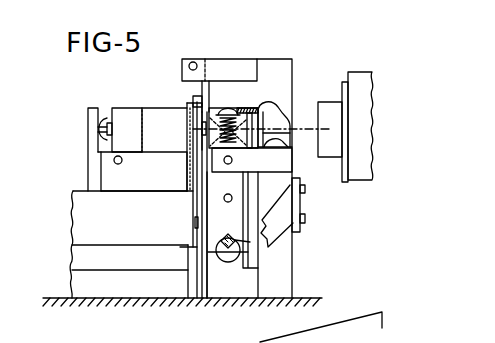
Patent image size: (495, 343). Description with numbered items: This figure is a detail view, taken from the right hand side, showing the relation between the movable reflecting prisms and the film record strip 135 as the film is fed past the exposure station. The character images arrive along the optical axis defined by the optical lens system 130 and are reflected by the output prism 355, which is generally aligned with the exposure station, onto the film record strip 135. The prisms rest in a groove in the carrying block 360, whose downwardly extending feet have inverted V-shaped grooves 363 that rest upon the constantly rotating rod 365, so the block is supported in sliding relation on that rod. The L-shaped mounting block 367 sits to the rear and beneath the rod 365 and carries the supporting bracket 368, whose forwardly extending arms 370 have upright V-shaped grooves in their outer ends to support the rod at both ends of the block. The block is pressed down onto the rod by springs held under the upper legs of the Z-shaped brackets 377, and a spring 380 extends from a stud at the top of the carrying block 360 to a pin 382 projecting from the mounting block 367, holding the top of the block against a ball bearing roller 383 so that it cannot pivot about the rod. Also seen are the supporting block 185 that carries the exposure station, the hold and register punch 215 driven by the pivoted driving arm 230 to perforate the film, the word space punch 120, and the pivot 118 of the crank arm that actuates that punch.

The pivot 118 is at (195, 63).
The output prism 355 is at (212, 116).
The spring 380 is at (251, 108).
The optical lens system 130 is at (333, 93).
The hold and register punch 215 is at (106, 127).
The word space punch 120 is at (197, 105).
The pin 382 is at (266, 121).
The driving arm 230 is at (89, 164).
The film record strip 135 is at (187, 128).
The Z-shaped brackets 377 is at (252, 160).
The ball bearing roller 383 is at (278, 150).
The supporting block 185 is at (82, 217).
The carrying block 360 is at (238, 227).
The forwardly extending arms 370 is at (281, 202).
The supporting bracket 368 is at (281, 215).
The L-shaped mounting block 367 is at (284, 255).
The rod 365 is at (228, 243).
The inverted V-shaped grooves 363 is at (238, 256).